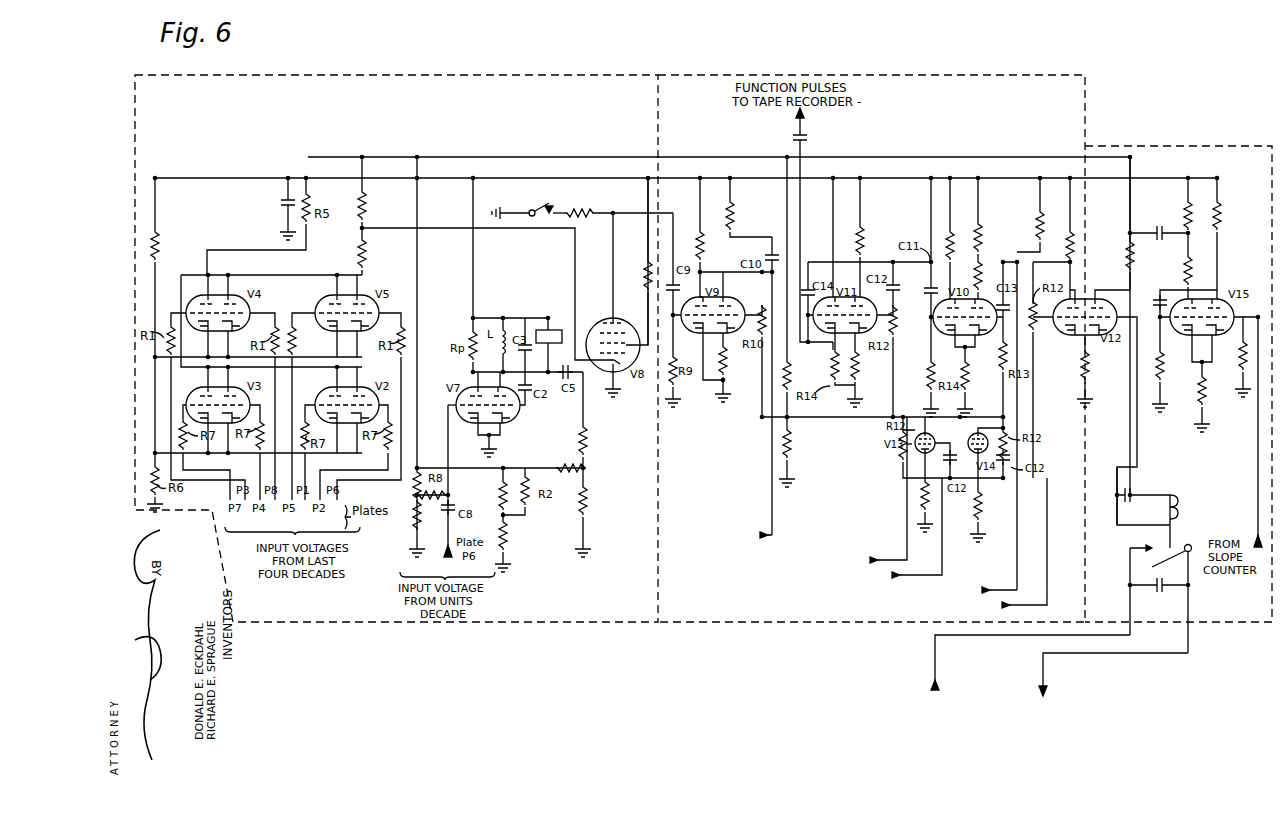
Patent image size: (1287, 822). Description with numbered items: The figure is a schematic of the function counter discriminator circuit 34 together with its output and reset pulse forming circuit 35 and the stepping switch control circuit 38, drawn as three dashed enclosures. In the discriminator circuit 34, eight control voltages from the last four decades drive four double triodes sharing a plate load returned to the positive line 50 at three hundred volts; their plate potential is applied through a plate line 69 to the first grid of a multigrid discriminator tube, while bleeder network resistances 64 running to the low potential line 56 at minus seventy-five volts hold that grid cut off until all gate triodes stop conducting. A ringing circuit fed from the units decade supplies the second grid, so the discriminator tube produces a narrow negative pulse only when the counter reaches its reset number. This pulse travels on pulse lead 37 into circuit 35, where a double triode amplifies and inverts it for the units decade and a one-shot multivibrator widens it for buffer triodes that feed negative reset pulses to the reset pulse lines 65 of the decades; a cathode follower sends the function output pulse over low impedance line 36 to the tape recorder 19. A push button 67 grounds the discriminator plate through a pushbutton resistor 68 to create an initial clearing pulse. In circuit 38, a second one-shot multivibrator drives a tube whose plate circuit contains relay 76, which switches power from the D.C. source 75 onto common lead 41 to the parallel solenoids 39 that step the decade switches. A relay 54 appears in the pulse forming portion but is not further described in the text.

The discriminator circuit 34 is at (554, 75).
The output and reset pulse forming circuit 35 is at (700, 75).
The stepping switch control circuit 38 is at (1143, 146).
The positive line 50 is at (228, 178).
The low potential line 56 is at (505, 157).
The low impedance line 36 is at (804, 151).
The pulse lead 37 is at (632, 222).
The bleeder network resistances 64 is at (355, 222).
The push button 67 is at (542, 206).
The pushbutton resistor 68 is at (596, 196).
The plate line 69 is at (548, 234).
The relay 54 is at (550, 330).
The reset pulse lines 65 is at (771, 498).
The relay 76 is at (1172, 526).
The common lead 41 is at (1124, 655).
The tape recorder 19 is at (859, 102).
The D.C. source 75 is at (1015, 688).
The solenoid 39 is at (1035, 727).